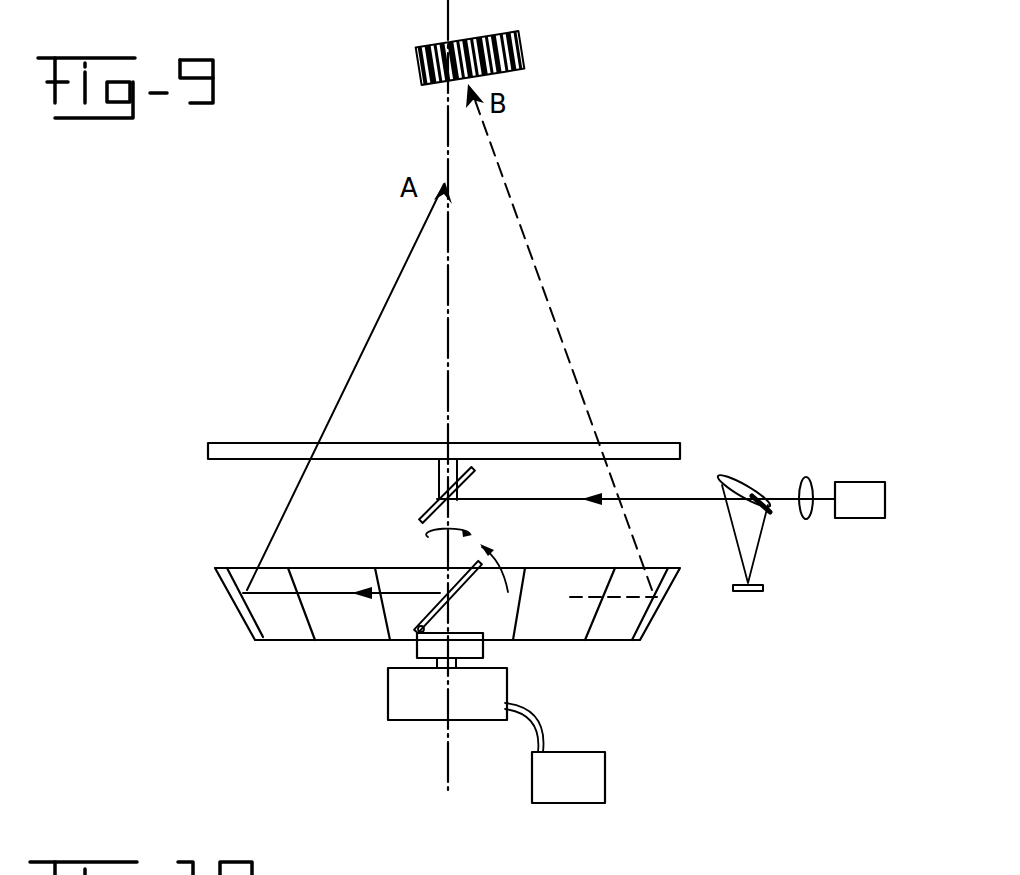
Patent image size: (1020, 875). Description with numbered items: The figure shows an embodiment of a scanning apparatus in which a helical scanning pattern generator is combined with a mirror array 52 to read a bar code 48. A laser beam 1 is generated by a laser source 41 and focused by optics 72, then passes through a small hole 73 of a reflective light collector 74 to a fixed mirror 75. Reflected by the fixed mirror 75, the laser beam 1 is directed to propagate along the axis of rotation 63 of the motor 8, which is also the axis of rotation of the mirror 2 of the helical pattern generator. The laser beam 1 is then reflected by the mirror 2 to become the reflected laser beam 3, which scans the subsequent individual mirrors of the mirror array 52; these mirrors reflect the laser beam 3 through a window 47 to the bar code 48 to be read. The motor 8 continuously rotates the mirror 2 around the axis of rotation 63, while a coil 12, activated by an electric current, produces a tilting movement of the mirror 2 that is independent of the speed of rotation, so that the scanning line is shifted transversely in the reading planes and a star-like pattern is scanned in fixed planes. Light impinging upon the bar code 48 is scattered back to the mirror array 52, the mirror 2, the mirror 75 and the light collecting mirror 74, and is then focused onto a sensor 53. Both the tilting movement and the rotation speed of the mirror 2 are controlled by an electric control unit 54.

The laser beam 1 is at (661, 503).
The mirror 2 is at (428, 626).
The reflected laser beam 3 is at (303, 598).
The motor 8 is at (428, 713).
The coil 12 is at (418, 647).
The laser source 41 is at (856, 490).
The window 47 is at (272, 452).
The bar code 48 is at (433, 44).
The mirror array 52 is at (266, 628).
The sensor 53 is at (754, 592).
The electric control unit 54 is at (604, 768).
The axis of rotation 63 is at (449, 326).
The collimating lens 72 is at (809, 480).
The small hole 73 is at (770, 510).
The reflective light collector 74 is at (762, 448).
The fixed mirror 75 is at (424, 516).